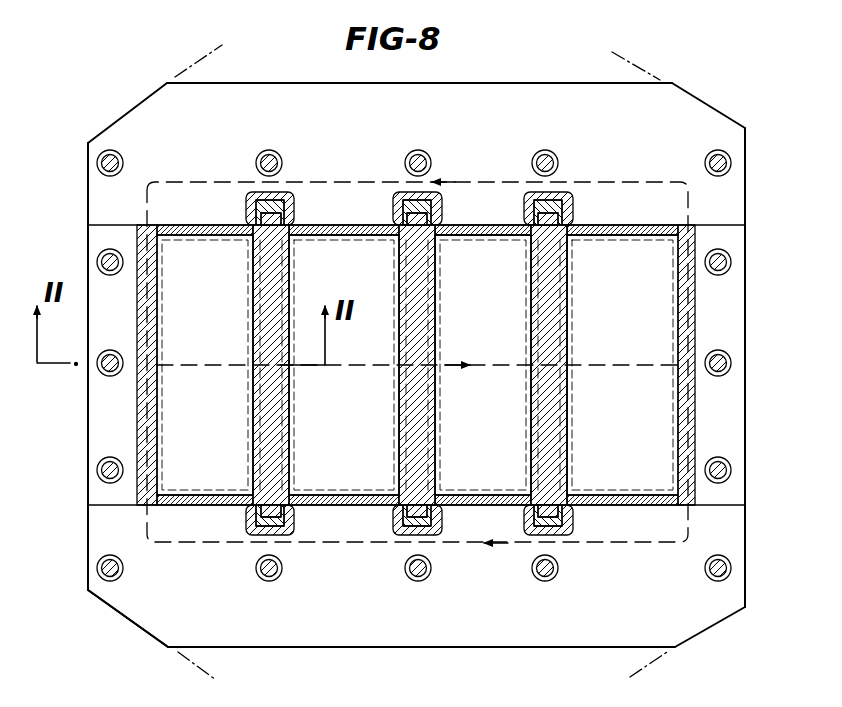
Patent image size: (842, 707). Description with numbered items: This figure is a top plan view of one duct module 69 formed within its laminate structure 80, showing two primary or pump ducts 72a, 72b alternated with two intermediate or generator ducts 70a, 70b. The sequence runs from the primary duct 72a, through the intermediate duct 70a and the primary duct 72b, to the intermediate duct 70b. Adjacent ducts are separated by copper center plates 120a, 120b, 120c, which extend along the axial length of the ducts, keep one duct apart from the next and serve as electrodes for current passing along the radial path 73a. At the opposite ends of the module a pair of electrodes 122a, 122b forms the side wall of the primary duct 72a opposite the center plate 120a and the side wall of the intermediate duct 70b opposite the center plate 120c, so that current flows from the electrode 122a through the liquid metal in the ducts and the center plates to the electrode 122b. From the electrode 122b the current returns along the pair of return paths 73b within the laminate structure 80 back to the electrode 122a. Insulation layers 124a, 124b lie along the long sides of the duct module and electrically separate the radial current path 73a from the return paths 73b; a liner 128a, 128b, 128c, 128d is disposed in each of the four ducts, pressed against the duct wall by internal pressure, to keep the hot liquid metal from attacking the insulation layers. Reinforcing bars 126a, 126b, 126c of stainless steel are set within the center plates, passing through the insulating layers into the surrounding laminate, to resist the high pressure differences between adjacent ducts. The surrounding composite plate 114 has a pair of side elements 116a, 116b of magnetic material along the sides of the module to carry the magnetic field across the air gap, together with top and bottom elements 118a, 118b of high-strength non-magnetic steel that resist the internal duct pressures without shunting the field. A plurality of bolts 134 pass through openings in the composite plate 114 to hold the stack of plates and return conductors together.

The duct module 69 is at (698, 403).
The laminate structure 80 is at (86, 439).
The composite plate 114 is at (88, 554).
The side element 116a is at (340, 635).
The side element 116b is at (220, 90).
The top element 118a is at (733, 303).
The bottom element 118b is at (88, 242).
The center plate 120a is at (283, 454).
The center plate 120b is at (421, 454).
The center plate 120c is at (562, 454).
The electrode 122a is at (158, 437).
The electrode 122b is at (693, 415).
The insulation layer 124a is at (200, 506).
The insulation layer 124b is at (180, 226).
The reinforcing bar 126a is at (296, 256).
The reinforcing bar 126b is at (440, 281).
The reinforcing bar 126c is at (574, 256).
The liner 128a is at (163, 403).
The liner 128b is at (292, 410).
The liner 128c is at (437, 413).
The liner 128d is at (568, 400).
The bolt 134 is at (122, 572).
The intermediate duct 70a is at (294, 292).
The intermediate duct 70b is at (572, 292).
The primary duct 72a is at (160, 330).
The primary duct 72b is at (438, 326).
The radial current path 73a is at (370, 364).
The return path 73b is at (346, 182).